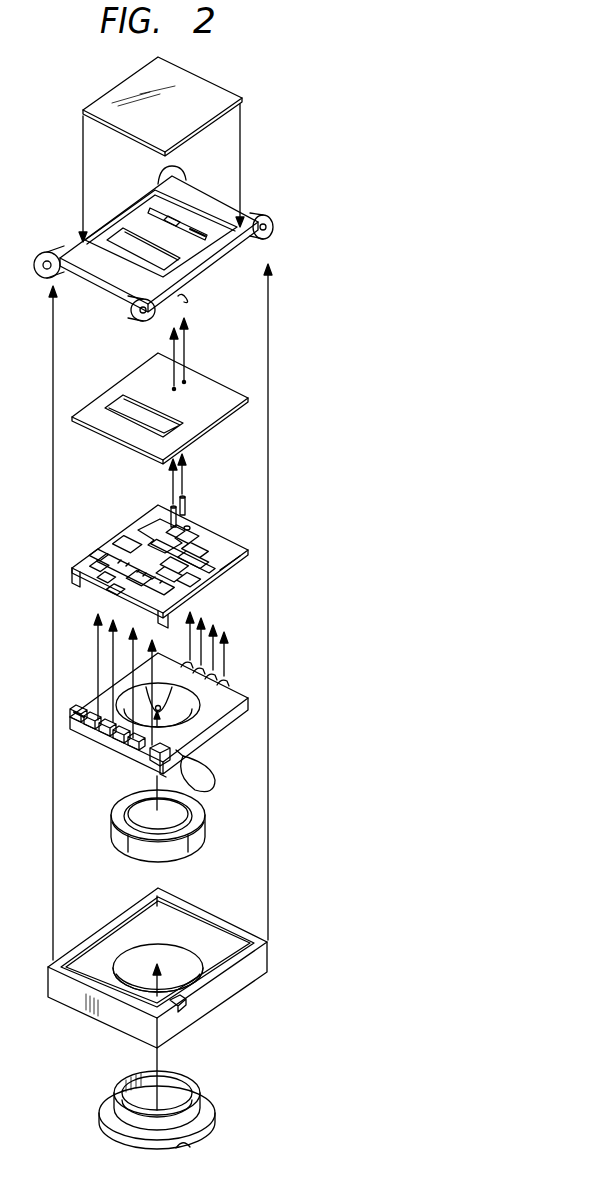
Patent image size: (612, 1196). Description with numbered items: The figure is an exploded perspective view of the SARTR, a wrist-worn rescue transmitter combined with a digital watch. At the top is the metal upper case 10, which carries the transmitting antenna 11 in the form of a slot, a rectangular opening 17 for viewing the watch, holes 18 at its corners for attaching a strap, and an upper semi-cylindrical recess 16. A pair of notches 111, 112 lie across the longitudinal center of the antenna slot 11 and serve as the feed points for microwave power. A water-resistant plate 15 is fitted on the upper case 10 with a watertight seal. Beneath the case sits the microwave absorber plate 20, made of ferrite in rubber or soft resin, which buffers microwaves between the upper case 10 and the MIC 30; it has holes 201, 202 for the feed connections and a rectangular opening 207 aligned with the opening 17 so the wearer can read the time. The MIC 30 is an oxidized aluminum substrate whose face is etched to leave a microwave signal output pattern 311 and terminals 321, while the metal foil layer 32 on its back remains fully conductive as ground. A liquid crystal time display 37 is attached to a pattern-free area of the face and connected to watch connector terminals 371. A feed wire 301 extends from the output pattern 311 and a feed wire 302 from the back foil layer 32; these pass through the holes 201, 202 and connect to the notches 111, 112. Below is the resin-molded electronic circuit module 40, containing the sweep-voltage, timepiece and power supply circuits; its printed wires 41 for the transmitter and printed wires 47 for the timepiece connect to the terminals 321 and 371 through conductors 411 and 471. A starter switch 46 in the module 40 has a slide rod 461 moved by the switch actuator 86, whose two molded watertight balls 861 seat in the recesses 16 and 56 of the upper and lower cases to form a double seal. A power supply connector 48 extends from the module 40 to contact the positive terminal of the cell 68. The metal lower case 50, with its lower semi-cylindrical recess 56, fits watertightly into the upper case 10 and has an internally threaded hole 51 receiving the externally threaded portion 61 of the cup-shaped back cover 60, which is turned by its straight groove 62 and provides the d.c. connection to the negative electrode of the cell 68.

The upper case 10 is at (153, 239).
The transmitting antenna 11 is at (204, 232).
The notch 111 is at (178, 216).
The notch 112 is at (172, 220).
The water-resistant plate 15 is at (226, 92).
The upper semi-cylindrical recess 16 is at (186, 302).
The rectangular opening 17 is at (195, 262).
The holes 18 is at (52, 270).
The microwave absorber plate 20 is at (161, 391).
The hole 201 is at (186, 381).
The hole 202 is at (172, 388).
The rectangular opening 207 is at (118, 402).
The MIC 30 is at (154, 541).
The feed wire 301 is at (186, 502).
The feed wire 302 is at (171, 509).
The microwave signal output pattern 311 is at (148, 524).
The metal foil layer 32 is at (212, 580).
The terminals 321 is at (190, 527).
The liquid crystal time display 37 is at (118, 556).
The watch connector terminals 371 is at (98, 553).
The electronic circuit module 40 is at (157, 709).
The printed wires 41 is at (224, 682).
The conductors 411 is at (189, 662).
The starter switch 46 is at (150, 760).
The slide rod 461 is at (158, 768).
The printed wires 47 is at (84, 732).
The conductors 471 is at (86, 710).
The power supply connector 48 is at (176, 706).
The lower case 50 is at (164, 958).
The internally threaded hole 51 is at (160, 950).
The lower semi-cylindrical recess 56 is at (186, 1006).
The back cover 60 is at (154, 1110).
The externally threaded portion 61 is at (128, 1118).
The straight groove 62 is at (200, 1146).
The cell 68 is at (200, 838).
The switch actuator 86 is at (212, 790).
The watertight balls 861 is at (185, 758).